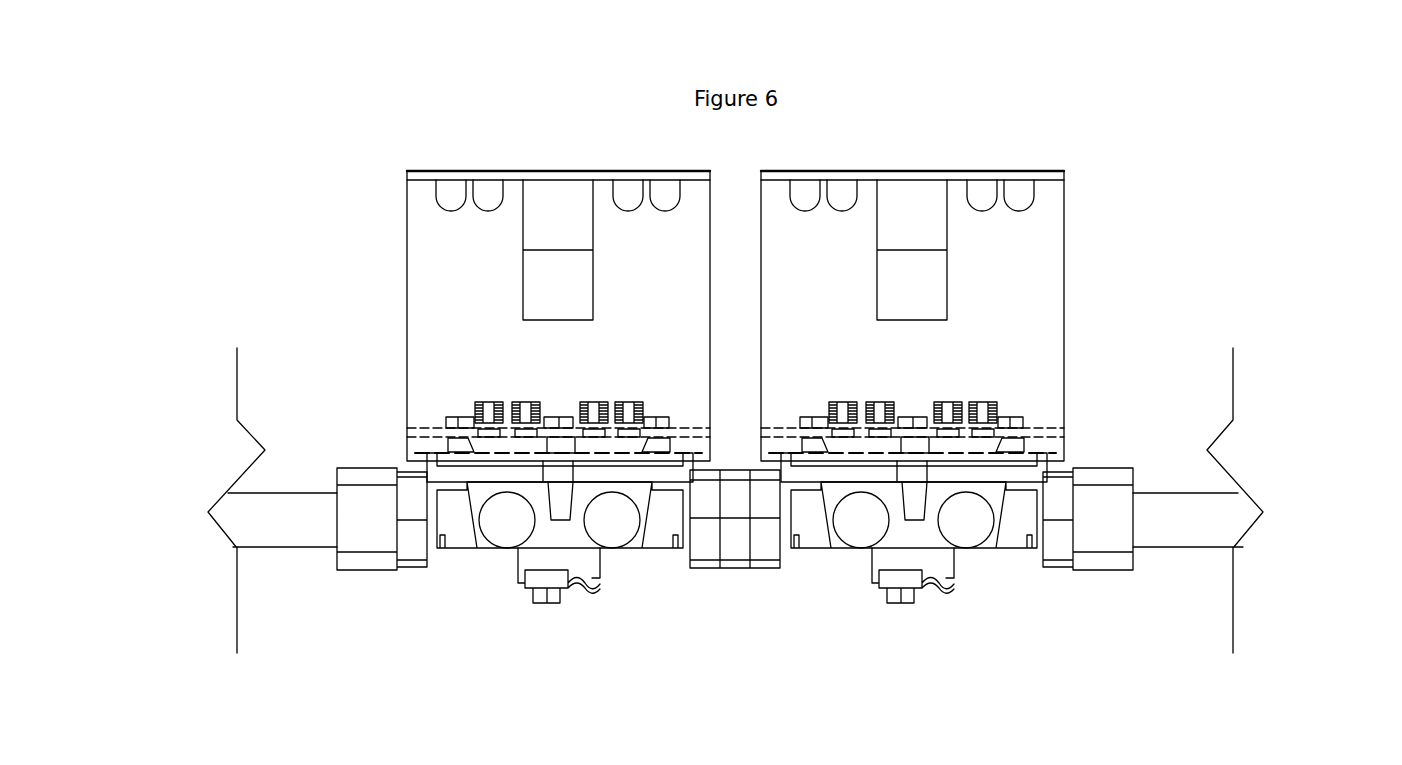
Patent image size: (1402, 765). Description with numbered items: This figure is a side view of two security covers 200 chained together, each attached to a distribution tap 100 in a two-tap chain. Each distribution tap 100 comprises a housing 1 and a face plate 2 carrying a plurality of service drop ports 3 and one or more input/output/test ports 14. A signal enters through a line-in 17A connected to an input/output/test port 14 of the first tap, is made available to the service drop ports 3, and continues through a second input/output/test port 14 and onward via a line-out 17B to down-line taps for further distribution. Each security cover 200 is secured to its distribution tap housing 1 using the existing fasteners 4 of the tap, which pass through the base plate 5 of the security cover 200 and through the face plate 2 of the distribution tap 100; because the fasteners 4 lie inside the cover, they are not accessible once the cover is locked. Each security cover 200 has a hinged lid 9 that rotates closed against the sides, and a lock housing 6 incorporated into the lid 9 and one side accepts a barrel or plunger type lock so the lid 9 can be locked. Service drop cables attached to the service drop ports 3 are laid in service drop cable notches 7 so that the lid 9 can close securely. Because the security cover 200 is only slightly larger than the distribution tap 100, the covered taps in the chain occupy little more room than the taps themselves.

The security cover 200 is at (425, 210).
The lid 9 is at (603, 168).
The lock housing 6 is at (567, 195).
The service drop cable notch 7 is at (729, 221).
The service drop ports 3 is at (630, 398).
The fasteners 4 is at (450, 415).
The base plate 5 is at (792, 420).
The face plate 2 is at (457, 448).
The input/output/test port 14 is at (503, 550).
The housing 1 is at (562, 542).
The distribution tap 100 is at (562, 608).
The line-in 17A is at (240, 513).
The line-out 17B is at (1223, 513).